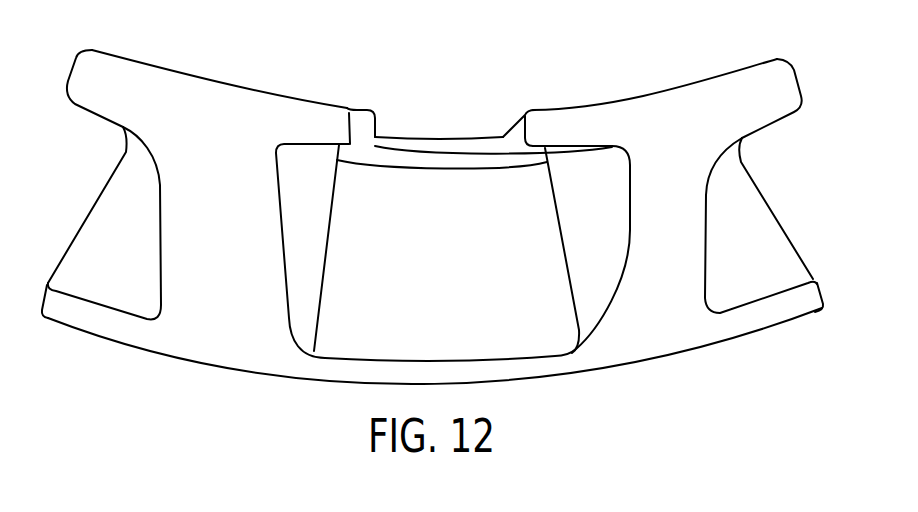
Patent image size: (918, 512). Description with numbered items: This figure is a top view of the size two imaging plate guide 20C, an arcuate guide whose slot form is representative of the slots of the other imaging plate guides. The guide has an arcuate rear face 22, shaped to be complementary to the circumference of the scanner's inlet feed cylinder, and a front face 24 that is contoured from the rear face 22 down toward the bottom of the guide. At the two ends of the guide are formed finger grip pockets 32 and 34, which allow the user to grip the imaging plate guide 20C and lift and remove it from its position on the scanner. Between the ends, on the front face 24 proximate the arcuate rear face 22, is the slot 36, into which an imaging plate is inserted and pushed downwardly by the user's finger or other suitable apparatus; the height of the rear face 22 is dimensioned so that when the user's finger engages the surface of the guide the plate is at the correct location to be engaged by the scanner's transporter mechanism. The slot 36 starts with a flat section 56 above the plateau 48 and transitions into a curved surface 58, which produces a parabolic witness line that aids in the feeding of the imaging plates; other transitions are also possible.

The size 2 imaging plate guide 20C is at (228, 389).
The arcuate rear face 22 is at (195, 76).
The front face 24 is at (652, 337).
The finger grip pocket 32 is at (132, 247).
The finger grip pocket 34 is at (757, 252).
The slot 36 is at (433, 170).
The plateau 48 is at (457, 282).
The flat section 56 is at (354, 147).
The curved surface 58 is at (403, 146).